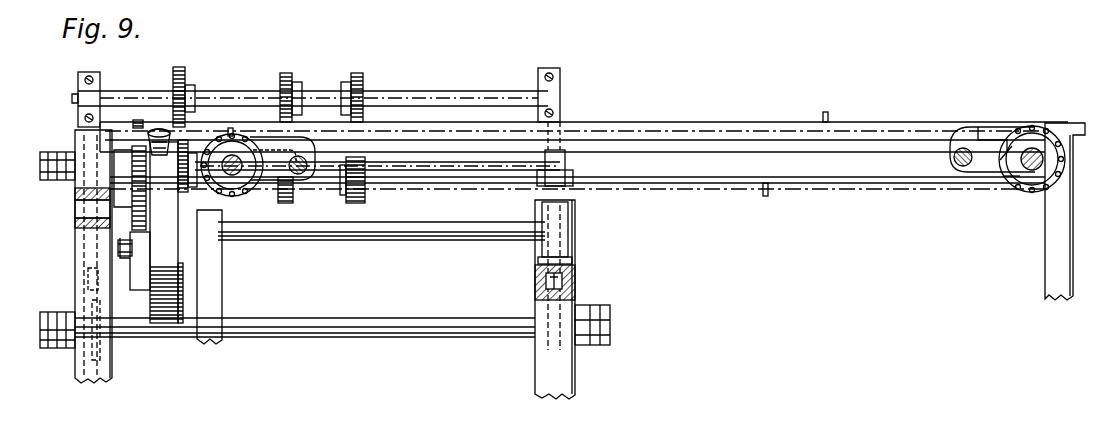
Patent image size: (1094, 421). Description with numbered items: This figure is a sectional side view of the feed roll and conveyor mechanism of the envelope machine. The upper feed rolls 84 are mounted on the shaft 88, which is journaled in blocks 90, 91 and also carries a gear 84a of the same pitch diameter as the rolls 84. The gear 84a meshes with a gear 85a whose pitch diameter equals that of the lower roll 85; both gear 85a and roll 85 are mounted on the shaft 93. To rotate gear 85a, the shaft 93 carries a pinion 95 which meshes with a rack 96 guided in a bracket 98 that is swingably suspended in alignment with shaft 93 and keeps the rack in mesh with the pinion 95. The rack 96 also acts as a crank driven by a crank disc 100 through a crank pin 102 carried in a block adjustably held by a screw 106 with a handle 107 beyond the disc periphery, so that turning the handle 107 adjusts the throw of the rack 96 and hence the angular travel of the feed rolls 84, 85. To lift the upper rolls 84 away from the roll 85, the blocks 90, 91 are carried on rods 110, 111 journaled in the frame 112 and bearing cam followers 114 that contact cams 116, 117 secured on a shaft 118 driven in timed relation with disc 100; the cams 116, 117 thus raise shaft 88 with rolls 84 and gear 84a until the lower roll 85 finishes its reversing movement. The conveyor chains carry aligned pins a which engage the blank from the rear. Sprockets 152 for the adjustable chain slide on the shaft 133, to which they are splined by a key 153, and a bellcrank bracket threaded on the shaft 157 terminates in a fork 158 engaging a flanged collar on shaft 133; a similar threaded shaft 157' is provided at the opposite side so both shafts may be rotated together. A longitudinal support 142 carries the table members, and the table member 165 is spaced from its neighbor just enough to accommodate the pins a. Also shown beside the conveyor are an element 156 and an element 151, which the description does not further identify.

The shaft 88 is at (471, 91).
The block 90 is at (86, 90).
The block 91 is at (561, 97).
The gear 84a is at (181, 67).
The feed rolls 84 is at (282, 77).
The rack 96 is at (137, 120).
The handle 107 is at (159, 126).
The pinion 95 is at (137, 148).
The table member 165 is at (922, 122).
The bar 156 is at (677, 185).
The shaft 93 is at (40, 165).
The pins a is at (230, 128).
The frame 112 is at (78, 244).
The rod 110 is at (80, 190).
The bracket 98 is at (112, 212).
The crank pin 102 is at (120, 258).
The cam followers 114 is at (88, 282).
The screw 106 is at (136, 272).
The crank disc 100 is at (182, 306).
The cam 116 is at (100, 350).
The shaft 118 is at (346, 325).
The gear 85a is at (236, 196).
The threaded shaft 157' is at (305, 158).
The lower feed roll 85 is at (343, 198).
The sprockets 152 is at (258, 184).
The rod 111 is at (567, 175).
The cam 117 is at (552, 345).
The longitudinal support 142 is at (1042, 124).
The threaded shaft 157 is at (971, 150).
The fork 158 is at (1022, 190).
The shaft 133 is at (1032, 171).
The key 153 is at (994, 160).
The link 151 is at (1010, 176).